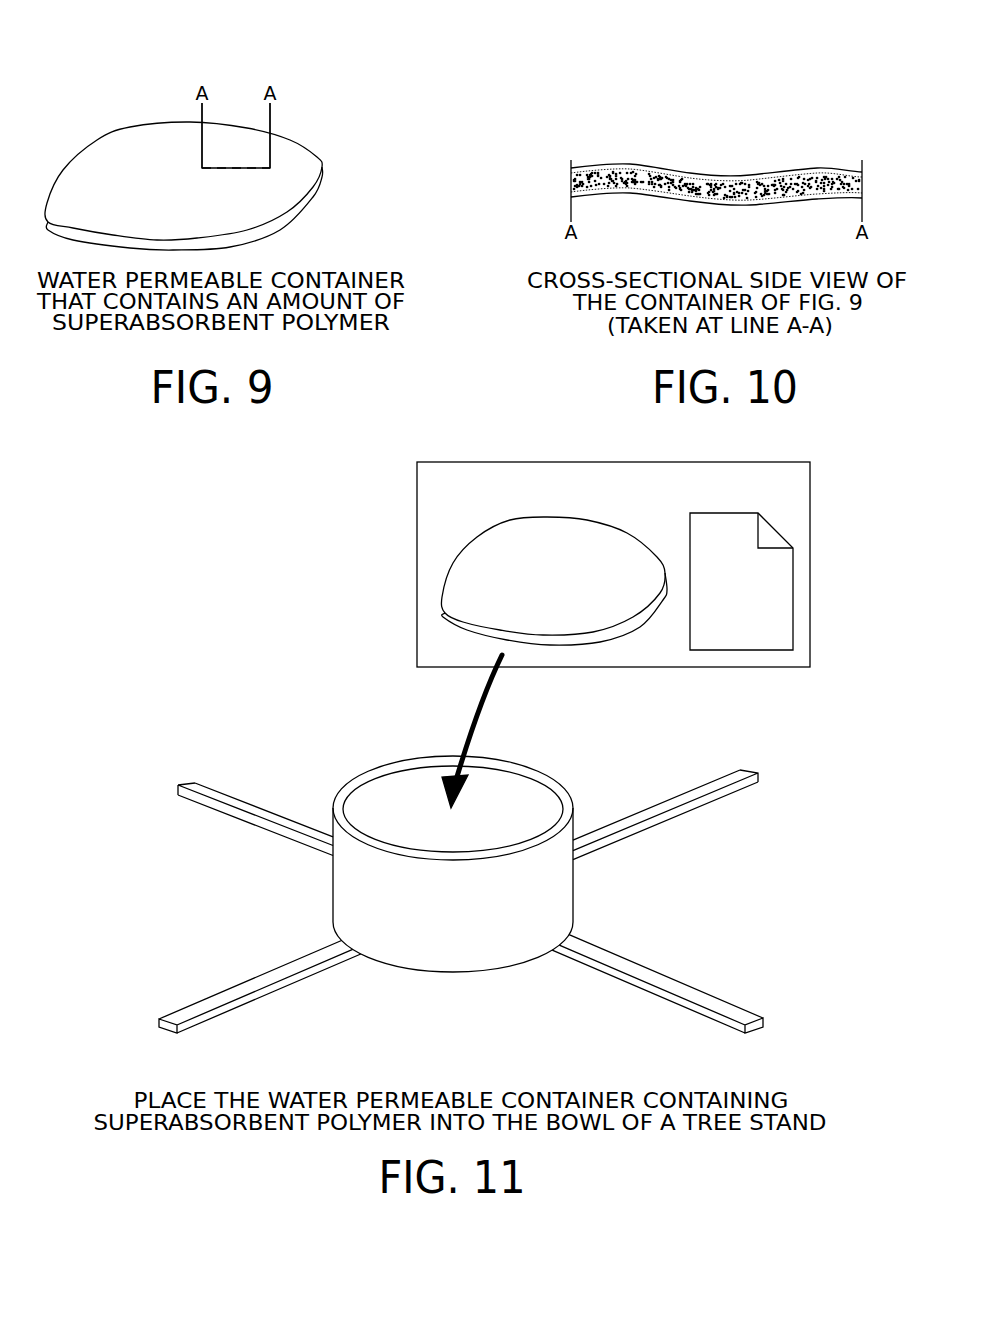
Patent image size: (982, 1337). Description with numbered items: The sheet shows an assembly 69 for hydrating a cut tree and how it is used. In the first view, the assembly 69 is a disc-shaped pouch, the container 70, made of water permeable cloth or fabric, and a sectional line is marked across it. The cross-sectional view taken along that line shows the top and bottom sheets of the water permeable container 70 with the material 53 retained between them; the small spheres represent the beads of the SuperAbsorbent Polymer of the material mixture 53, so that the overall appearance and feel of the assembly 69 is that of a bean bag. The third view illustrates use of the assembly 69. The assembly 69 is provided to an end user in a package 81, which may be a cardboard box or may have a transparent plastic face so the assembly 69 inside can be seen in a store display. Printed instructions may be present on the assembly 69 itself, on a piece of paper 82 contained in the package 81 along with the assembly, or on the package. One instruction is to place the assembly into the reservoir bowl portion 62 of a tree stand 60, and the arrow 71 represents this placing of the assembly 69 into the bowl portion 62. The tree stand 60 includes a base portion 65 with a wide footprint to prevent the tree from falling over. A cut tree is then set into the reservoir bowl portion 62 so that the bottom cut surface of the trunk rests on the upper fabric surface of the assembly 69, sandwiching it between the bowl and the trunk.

In FIG. 9, the assembly 69 is at (313, 84).
In FIG. 11, the assembly 69 is at (542, 582).
In FIG. 9, the container 70 is at (133, 131).
In FIG. 10, the container 70 is at (752, 176).
In FIG. 10, the material 53 is at (713, 182).
In FIG. 11, the package 81 is at (461, 506).
In FIG. 11, the piece of paper 82 is at (731, 586).
In FIG. 11, the arrow 71 is at (476, 708).
In FIG. 11, the tree stand 60 is at (493, 890).
In FIG. 11, the reservoir bowl portion 62 is at (442, 909).
In FIG. 11, the base portion 65 is at (218, 793).